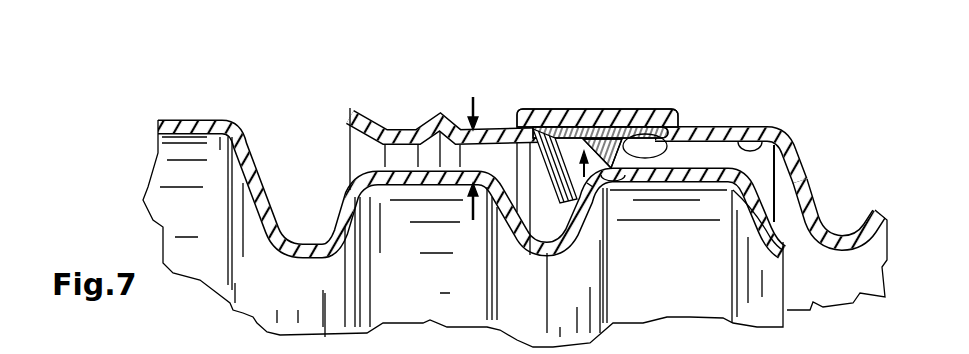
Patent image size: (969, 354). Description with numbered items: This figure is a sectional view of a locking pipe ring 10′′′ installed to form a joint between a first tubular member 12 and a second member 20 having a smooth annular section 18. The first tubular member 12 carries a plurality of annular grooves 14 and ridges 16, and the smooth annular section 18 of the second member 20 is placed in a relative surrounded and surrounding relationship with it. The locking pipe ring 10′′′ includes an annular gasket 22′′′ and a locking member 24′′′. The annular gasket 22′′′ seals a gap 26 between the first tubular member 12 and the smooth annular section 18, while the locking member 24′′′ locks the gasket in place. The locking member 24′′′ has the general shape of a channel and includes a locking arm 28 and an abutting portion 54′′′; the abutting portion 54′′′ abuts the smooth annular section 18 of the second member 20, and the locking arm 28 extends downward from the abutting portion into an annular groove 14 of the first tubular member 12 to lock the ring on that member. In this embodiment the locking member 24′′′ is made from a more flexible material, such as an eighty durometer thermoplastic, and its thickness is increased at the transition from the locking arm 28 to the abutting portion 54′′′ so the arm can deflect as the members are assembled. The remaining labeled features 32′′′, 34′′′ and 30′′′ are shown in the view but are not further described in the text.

The first tubular member 12 is at (202, 119).
The annular grooves 14 is at (303, 247).
The ridges 16 is at (414, 147).
The smooth annular section 18 is at (773, 126).
The second member 20 is at (797, 160).
The gap 26 is at (486, 91).
The locking arm 28 is at (560, 200).
The abutting portion 54′′′ is at (560, 126).
The locking member 24′′′ is at (583, 130).
The wedge member 32′′′ is at (586, 120).
The nut body 34′′′ is at (618, 118).
The annular gasket 22′′′ is at (680, 130).
The bracket 30′′′ is at (652, 146).
The locking pipe ring 10′′′ is at (590, 187).